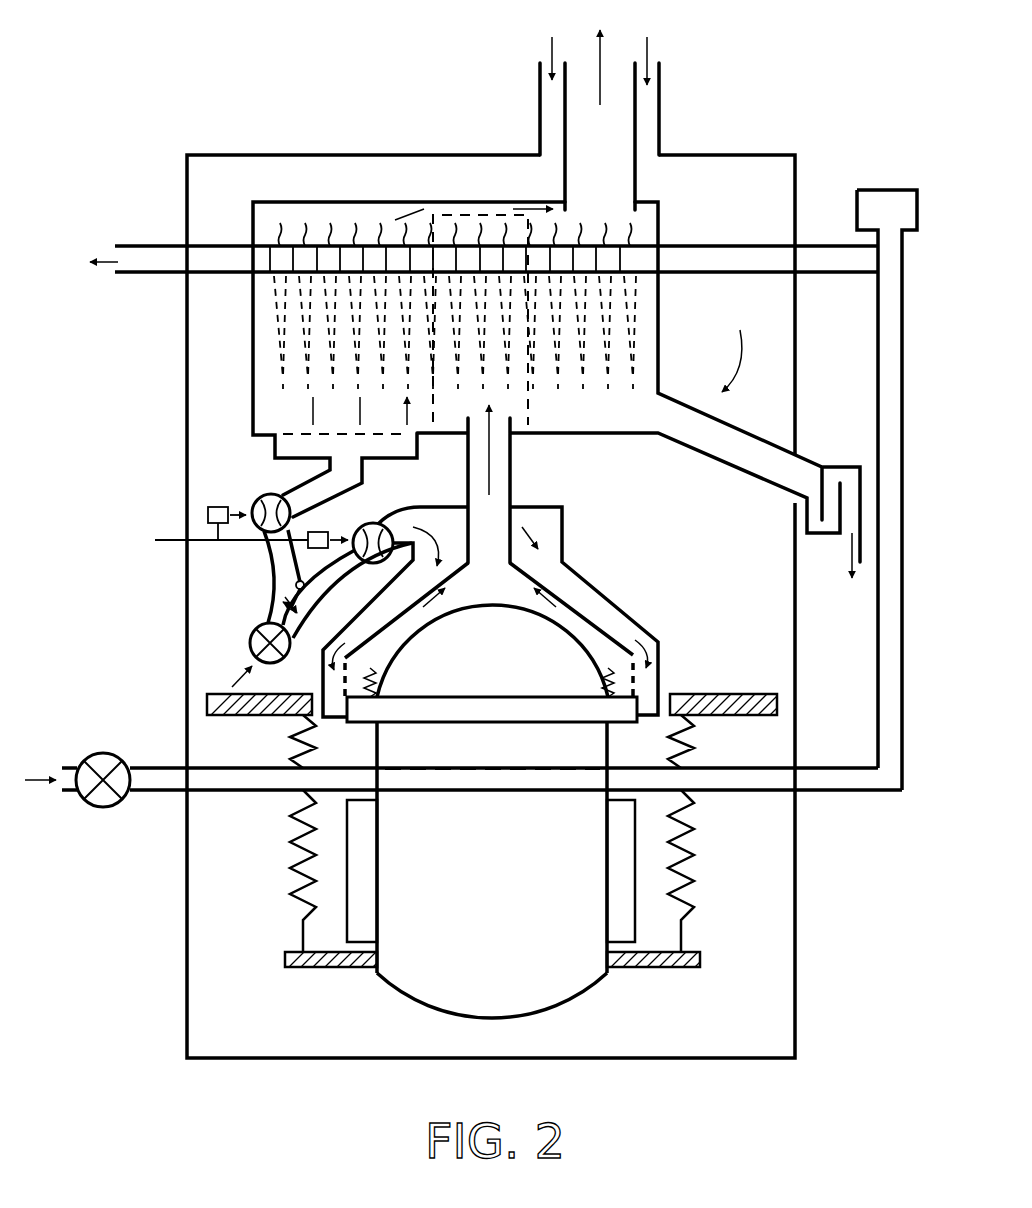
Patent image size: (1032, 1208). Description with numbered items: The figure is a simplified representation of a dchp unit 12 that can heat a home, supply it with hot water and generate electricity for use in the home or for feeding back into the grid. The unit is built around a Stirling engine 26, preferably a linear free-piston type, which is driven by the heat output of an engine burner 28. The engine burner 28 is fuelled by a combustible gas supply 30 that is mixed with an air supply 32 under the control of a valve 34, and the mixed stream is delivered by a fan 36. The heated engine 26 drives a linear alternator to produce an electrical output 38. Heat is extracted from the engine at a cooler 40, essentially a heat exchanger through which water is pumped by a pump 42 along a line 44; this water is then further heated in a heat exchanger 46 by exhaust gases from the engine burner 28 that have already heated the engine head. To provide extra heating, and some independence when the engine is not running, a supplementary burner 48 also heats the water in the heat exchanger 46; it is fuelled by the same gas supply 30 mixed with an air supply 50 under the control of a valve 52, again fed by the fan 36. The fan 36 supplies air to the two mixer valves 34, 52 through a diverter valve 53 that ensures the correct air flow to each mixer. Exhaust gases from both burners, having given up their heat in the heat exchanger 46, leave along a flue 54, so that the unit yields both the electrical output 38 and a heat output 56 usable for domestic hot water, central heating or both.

The dchp unit 12 is at (828, 112).
The Stirling engine 26 is at (506, 860).
The engine burner 28 is at (602, 663).
The combustible gas supply 30 is at (155, 540).
The air supply 32 is at (340, 567).
The valve 34 is at (376, 523).
The fan 36 is at (257, 630).
The electrical output 38 is at (577, 962).
The cooler 40 is at (505, 794).
The pump 42 is at (93, 758).
The line 44 is at (175, 769).
The heat exchanger 46 is at (283, 200).
The supplementary burner 48 is at (287, 433).
The air supply 50 is at (282, 556).
The valve 52 is at (262, 496).
The diverter valve 53 is at (292, 593).
The flue 54 is at (638, 110).
The heat output 56 is at (133, 246).